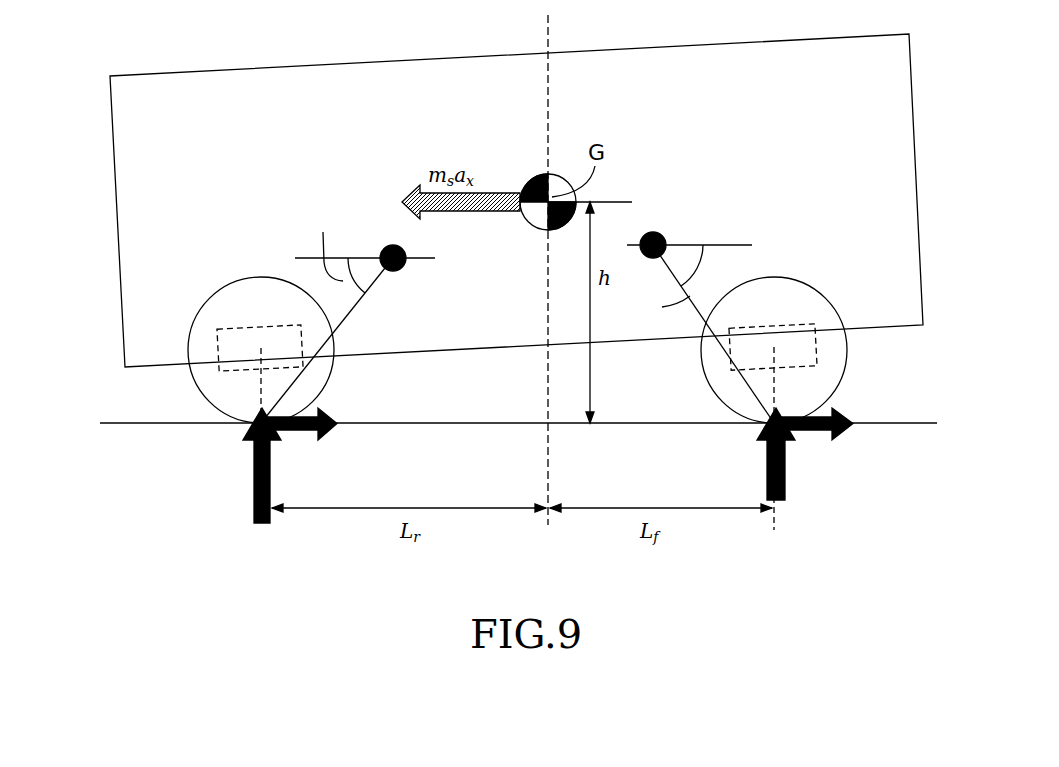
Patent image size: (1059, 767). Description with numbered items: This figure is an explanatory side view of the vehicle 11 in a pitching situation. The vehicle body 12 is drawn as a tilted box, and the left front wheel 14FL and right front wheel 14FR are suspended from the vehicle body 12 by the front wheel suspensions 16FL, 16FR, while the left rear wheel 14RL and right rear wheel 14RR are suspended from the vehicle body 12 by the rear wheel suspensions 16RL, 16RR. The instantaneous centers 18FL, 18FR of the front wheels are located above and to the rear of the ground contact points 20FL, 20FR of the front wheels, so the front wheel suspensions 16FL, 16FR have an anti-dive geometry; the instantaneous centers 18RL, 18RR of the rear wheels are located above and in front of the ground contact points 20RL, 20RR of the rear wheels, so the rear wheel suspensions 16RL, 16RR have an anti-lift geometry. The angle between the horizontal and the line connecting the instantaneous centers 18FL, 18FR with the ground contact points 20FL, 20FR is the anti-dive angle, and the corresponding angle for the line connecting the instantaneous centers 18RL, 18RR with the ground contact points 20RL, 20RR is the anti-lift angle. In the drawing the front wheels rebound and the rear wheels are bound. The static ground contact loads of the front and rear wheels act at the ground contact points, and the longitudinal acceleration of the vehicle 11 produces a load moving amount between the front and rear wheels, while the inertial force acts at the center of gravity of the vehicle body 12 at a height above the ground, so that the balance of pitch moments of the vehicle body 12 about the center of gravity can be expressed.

The vehicle 11 is at (355, 55).
The vehicle body 12 is at (916, 130).
The left rear wheel 14RL is at (228, 277).
The right rear wheel 14RR is at (238, 324).
The left front wheel 14FL is at (800, 277).
The right front wheel 14FR is at (794, 321).
The rear wheel suspension 16RL is at (236, 373).
The rear wheel suspension 16RR is at (179, 374).
The front wheel suspension 16FL is at (748, 350).
The front wheel suspension 16FR is at (718, 427).
The instantaneous center 18RL is at (405, 268).
The instantaneous center 18RR is at (385, 313).
The instantaneous center 18FL is at (660, 233).
The instantaneous center 18FR is at (704, 295).
The ground contact point 20RL is at (273, 430).
The ground contact point 20RR is at (297, 454).
The ground contact point 20FL is at (770, 427).
The ground contact point 20FR is at (770, 443).